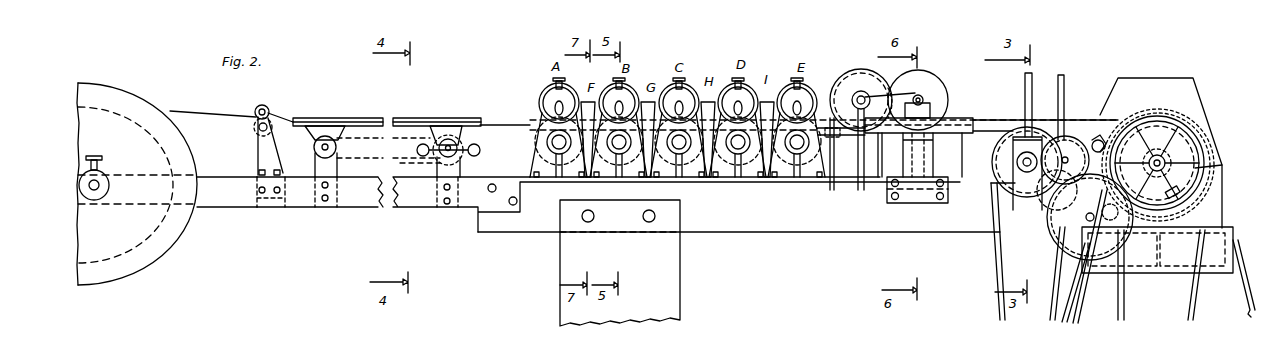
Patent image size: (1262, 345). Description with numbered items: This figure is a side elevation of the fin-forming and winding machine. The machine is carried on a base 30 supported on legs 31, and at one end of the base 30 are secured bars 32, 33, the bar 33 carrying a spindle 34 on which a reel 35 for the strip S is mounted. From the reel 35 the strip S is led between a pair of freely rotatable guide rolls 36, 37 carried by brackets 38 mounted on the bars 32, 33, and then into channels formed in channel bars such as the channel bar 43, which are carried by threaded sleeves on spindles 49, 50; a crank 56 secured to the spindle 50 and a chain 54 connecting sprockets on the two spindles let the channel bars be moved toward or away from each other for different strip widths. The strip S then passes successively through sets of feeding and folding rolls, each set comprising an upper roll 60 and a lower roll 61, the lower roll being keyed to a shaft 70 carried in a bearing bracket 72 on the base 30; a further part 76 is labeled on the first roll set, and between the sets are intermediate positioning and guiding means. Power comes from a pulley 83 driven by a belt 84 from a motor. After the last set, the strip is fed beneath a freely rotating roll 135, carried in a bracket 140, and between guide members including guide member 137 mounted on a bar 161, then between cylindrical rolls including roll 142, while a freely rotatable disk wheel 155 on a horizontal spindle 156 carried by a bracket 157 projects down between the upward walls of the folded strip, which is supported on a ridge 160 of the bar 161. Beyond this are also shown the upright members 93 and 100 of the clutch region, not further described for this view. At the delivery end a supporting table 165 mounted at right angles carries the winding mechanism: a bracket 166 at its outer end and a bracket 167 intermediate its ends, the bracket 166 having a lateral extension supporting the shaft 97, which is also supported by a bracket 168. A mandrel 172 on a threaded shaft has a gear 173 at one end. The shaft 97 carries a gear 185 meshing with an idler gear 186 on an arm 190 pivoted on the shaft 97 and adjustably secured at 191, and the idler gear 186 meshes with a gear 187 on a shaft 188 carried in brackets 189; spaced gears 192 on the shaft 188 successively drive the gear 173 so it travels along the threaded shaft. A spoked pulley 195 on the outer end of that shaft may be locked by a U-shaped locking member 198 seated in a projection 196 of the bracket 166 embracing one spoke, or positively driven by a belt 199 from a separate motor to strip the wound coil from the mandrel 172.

The base 30 is at (851, 224).
The legs 31 is at (665, 307).
The bar 32 is at (360, 210).
The bar 33 is at (221, 200).
The spindle 34 is at (94, 200).
The reel 35 is at (131, 100).
The guide roll 36 is at (256, 109).
The guide roll 37 is at (255, 130).
The brackets 38 is at (257, 156).
The channel bar 43 is at (362, 118).
The spindle 49 is at (322, 149).
The spindle 50 is at (450, 140).
The chain 54 is at (407, 163).
The crank 56 is at (434, 140).
The strip S is at (493, 122).
The upper roll 60 is at (545, 90).
The lower roll 61 is at (540, 155).
The shaft 70 is at (546, 142).
The bearing bracket 72 is at (552, 180).
The slot 76 is at (554, 107).
The pulley 83 is at (993, 193).
The belt 84 is at (996, 276).
The rod 93 is at (1015, 105).
The shaft 97 is at (1018, 150).
The rod 100 is at (1057, 80).
The roll 135 is at (856, 72).
The guide member 137 is at (838, 165).
The bracket 140 is at (865, 160).
The roll 142 is at (960, 122).
The disk wheel 155 is at (944, 98).
The spindle 156 is at (921, 96).
The bracket 157 is at (886, 93).
The ridge 160 is at (911, 168).
The bar 161 is at (962, 140).
The supporting table 165 is at (1212, 268).
The bracket 166 is at (1190, 214).
The bracket 167 is at (1194, 79).
The bracket 168 is at (1068, 248).
The mandrel 172 is at (1158, 153).
The gear 173 is at (1158, 151).
The gear 185 is at (1017, 162).
The idler gear 186 is at (1038, 197).
The gear 187 is at (1136, 258).
The shaft 188 is at (1093, 276).
The brackets 189 is at (1050, 286).
The arm 190 is at (1096, 138).
The adjustable securing point 191 is at (1099, 138).
The gears 192 is at (1077, 217).
The pulley 195 is at (1182, 131).
The projection 196 is at (1196, 168).
The locking member 198 is at (1180, 194).
The belt 199 is at (1200, 312).